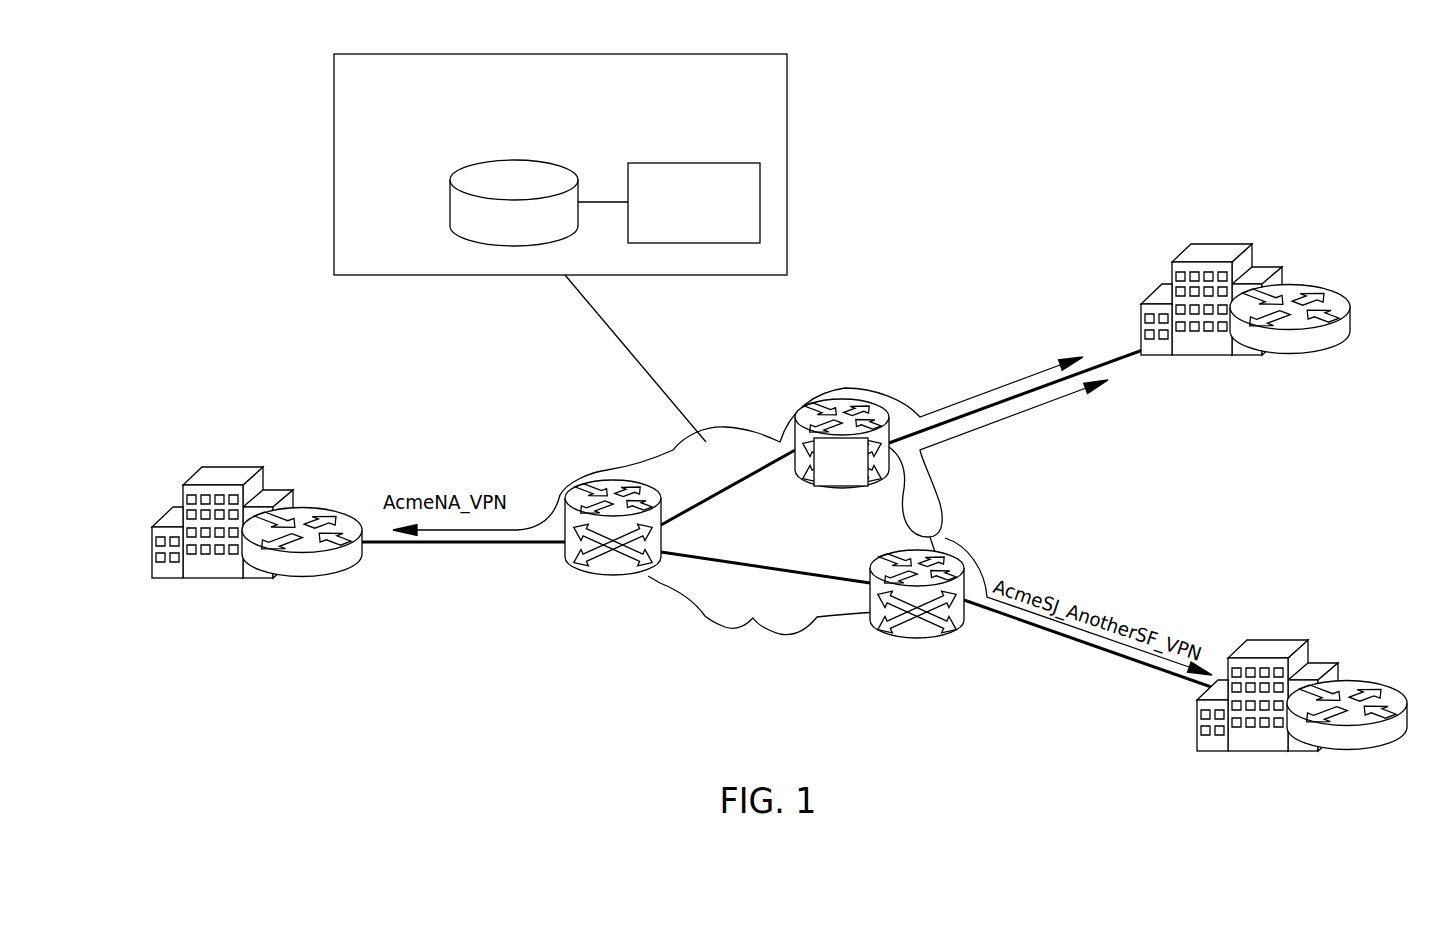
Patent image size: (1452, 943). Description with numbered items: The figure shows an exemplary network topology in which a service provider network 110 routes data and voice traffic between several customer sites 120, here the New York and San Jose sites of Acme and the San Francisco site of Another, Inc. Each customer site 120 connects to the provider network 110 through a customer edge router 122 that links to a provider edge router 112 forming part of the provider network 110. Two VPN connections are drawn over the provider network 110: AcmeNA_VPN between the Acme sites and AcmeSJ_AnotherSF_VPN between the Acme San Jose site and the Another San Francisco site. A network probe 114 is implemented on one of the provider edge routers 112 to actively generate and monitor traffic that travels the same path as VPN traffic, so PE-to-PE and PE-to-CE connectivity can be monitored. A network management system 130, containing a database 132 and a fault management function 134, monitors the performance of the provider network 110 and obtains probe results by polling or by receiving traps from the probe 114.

The service provider network 110 is at (944, 493).
The provider edge (PE) router 112 is at (573, 568).
The network probe 114 is at (843, 478).
The customer site 120 is at (140, 489).
The customer edge (CE) router 122 is at (310, 578).
The network management system 130 is at (606, 164).
The database 132 is at (450, 195).
The fault management function 134 is at (690, 163).